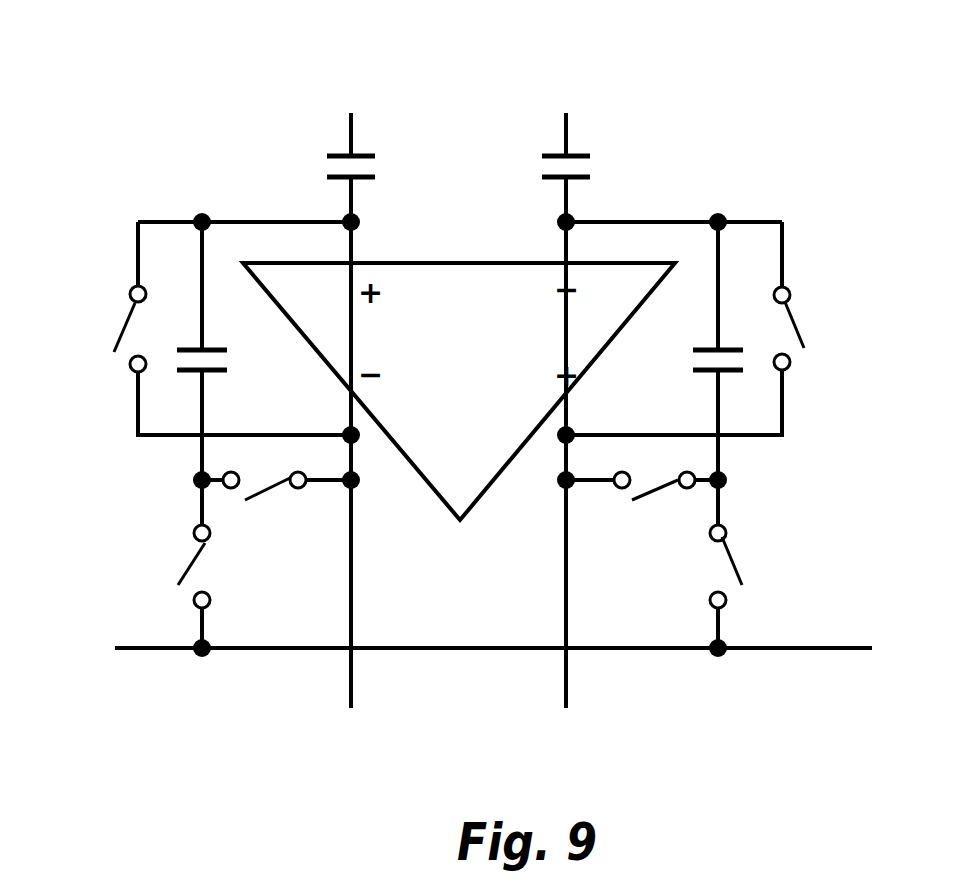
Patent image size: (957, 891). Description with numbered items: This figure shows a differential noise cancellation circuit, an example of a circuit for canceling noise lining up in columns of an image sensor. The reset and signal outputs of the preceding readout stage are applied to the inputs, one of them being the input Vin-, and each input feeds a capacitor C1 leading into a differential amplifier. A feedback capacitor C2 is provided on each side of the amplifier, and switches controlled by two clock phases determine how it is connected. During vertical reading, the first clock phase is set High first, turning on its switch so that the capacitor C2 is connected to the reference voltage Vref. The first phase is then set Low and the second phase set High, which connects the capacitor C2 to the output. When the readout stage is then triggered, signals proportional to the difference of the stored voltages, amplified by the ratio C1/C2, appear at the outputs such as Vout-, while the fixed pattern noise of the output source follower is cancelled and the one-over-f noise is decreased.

The capacitor C1 is at (462, 159).
The capacitor C2 is at (460, 369).
The reference voltage Vref is at (456, 654).
The negative input Vin- is at (353, 109).
The negative output Vout- is at (378, 704).